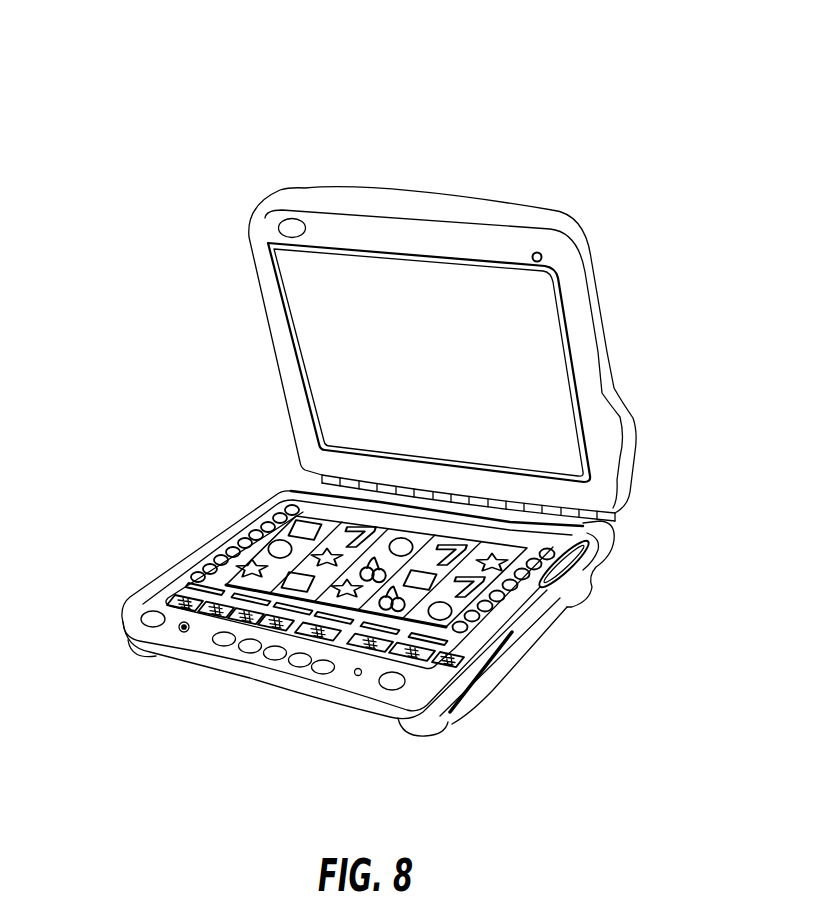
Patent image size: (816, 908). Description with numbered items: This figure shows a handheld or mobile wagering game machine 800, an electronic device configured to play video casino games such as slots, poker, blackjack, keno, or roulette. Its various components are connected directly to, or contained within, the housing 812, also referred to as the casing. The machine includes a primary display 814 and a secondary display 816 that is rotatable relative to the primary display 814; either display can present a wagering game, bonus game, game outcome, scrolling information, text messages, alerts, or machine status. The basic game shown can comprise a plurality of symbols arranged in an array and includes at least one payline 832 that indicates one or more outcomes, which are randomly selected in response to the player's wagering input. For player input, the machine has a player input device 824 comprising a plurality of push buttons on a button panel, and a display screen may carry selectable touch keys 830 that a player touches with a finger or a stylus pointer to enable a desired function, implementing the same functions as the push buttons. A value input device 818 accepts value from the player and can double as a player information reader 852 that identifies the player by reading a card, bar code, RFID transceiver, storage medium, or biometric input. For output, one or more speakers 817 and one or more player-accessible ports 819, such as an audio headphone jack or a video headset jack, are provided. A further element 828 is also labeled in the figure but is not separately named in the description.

The portable electronic gaming device 800 is at (205, 27).
The housing 812 is at (243, 522).
The primary display 814 is at (292, 492).
The secondary display 816 is at (318, 342).
The speakers 817 is at (127, 623).
The value input device 818 is at (523, 648).
The player-accessible ports 819 is at (184, 633).
The player input device 824 is at (267, 660).
The lid housing 828 is at (600, 519).
The touch keys 830 is at (368, 657).
The payline 832 is at (562, 606).
The player information reader 852 is at (598, 567).